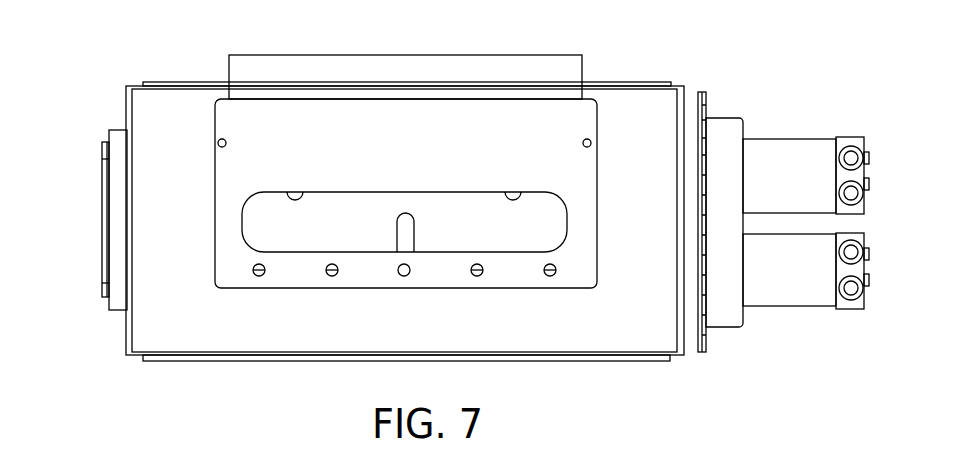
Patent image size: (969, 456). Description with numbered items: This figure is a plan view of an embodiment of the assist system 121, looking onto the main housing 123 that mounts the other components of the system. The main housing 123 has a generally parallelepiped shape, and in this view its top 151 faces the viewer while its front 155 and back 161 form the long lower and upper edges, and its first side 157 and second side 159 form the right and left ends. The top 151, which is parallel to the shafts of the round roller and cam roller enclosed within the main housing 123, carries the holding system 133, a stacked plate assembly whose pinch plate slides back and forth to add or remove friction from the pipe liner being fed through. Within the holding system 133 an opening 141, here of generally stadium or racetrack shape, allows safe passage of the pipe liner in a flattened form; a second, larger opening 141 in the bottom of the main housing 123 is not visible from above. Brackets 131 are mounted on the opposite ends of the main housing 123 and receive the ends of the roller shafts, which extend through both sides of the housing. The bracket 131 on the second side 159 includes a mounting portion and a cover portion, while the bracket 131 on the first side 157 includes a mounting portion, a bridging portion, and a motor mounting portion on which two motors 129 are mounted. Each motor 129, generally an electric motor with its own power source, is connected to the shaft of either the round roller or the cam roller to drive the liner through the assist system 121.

The assist system 121 is at (358, 211).
The main housing 123 is at (190, 82).
The motor 129 is at (869, 233).
The bracket 131 is at (100, 191).
The holding system 133 is at (368, 133).
The opening 141 is at (470, 223).
The top 151 is at (200, 322).
The front 155 is at (350, 362).
The first side 157 is at (695, 365).
The second side 159 is at (119, 105).
The back 161 is at (302, 48).